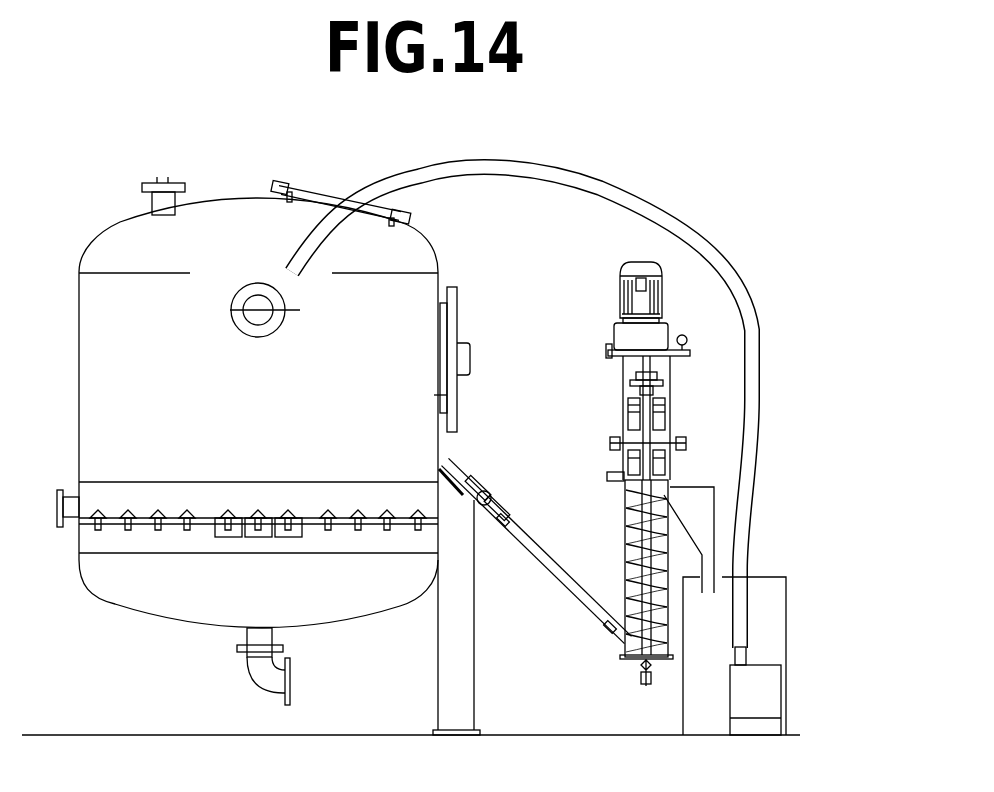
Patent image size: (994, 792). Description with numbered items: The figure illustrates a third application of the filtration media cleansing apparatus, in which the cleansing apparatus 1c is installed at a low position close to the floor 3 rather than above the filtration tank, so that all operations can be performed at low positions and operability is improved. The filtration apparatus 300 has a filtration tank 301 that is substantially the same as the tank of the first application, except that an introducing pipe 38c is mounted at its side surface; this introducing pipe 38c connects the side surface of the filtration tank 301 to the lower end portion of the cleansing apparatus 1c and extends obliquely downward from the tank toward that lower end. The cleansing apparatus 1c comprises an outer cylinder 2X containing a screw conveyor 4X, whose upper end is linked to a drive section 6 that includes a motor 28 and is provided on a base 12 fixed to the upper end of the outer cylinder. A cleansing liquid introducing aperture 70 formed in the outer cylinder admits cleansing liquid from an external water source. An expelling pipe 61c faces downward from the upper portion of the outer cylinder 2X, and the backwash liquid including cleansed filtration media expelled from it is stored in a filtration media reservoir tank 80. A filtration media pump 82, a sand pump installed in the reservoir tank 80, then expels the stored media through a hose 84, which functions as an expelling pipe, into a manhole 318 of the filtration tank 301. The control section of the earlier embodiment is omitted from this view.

The filtration apparatus 300 is at (100, 192).
The filtration tank 301 is at (240, 199).
The manhole 318 is at (323, 192).
The hose 84 is at (742, 252).
The cleansing apparatus 1c is at (597, 302).
The motor 28 is at (664, 294).
The drive section 6 is at (676, 308).
The base 12 is at (620, 372).
The expelling pipe 61c is at (702, 482).
The cleansing liquid introducing aperture 70 is at (610, 468).
The screw conveyor 4X is at (625, 508).
The outer cylinder 2X is at (625, 593).
The introducing pipe 38c is at (540, 567).
The floor 3 is at (557, 733).
The filtration media reservoir tank 80 is at (777, 577).
The filtration media pump 82 is at (764, 694).